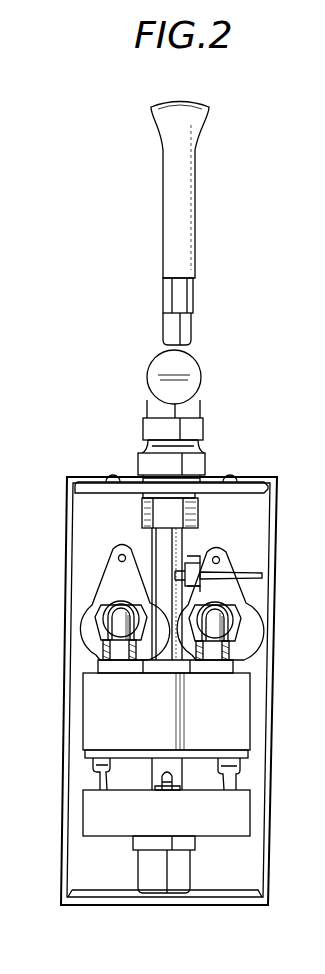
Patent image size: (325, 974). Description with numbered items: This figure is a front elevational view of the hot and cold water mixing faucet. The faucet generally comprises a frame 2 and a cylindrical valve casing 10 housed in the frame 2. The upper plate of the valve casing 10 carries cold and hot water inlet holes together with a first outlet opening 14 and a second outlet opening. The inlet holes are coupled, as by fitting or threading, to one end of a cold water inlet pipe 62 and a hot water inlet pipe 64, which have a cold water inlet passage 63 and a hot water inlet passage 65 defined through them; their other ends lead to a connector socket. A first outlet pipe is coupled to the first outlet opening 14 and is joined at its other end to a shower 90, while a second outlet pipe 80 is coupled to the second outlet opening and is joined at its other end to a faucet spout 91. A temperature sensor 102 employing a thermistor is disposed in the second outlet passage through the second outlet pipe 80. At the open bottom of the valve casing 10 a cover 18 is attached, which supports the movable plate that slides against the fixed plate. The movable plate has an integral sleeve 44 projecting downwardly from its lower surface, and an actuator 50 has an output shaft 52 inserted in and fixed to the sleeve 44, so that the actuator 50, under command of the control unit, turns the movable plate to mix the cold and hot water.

The frame 2 is at (278, 509).
The valve casing 10 is at (240, 722).
The first outlet opening 14 is at (324, 316).
The cover 18 is at (197, 753).
The sleeve 44 is at (153, 766).
The actuator 50 is at (242, 812).
The output shaft 52 is at (173, 790).
The cold water inlet pipe 62 is at (115, 628).
The cold water inlet passage 63 is at (118, 652).
The hot water inlet pipe 64 is at (223, 624).
The hot water inlet passage 65 is at (216, 651).
The second outlet pipe 80 is at (153, 541).
The shower 90 is at (196, 226).
The faucet spout 91 is at (201, 378).
The temperature sensor 102 is at (181, 590).